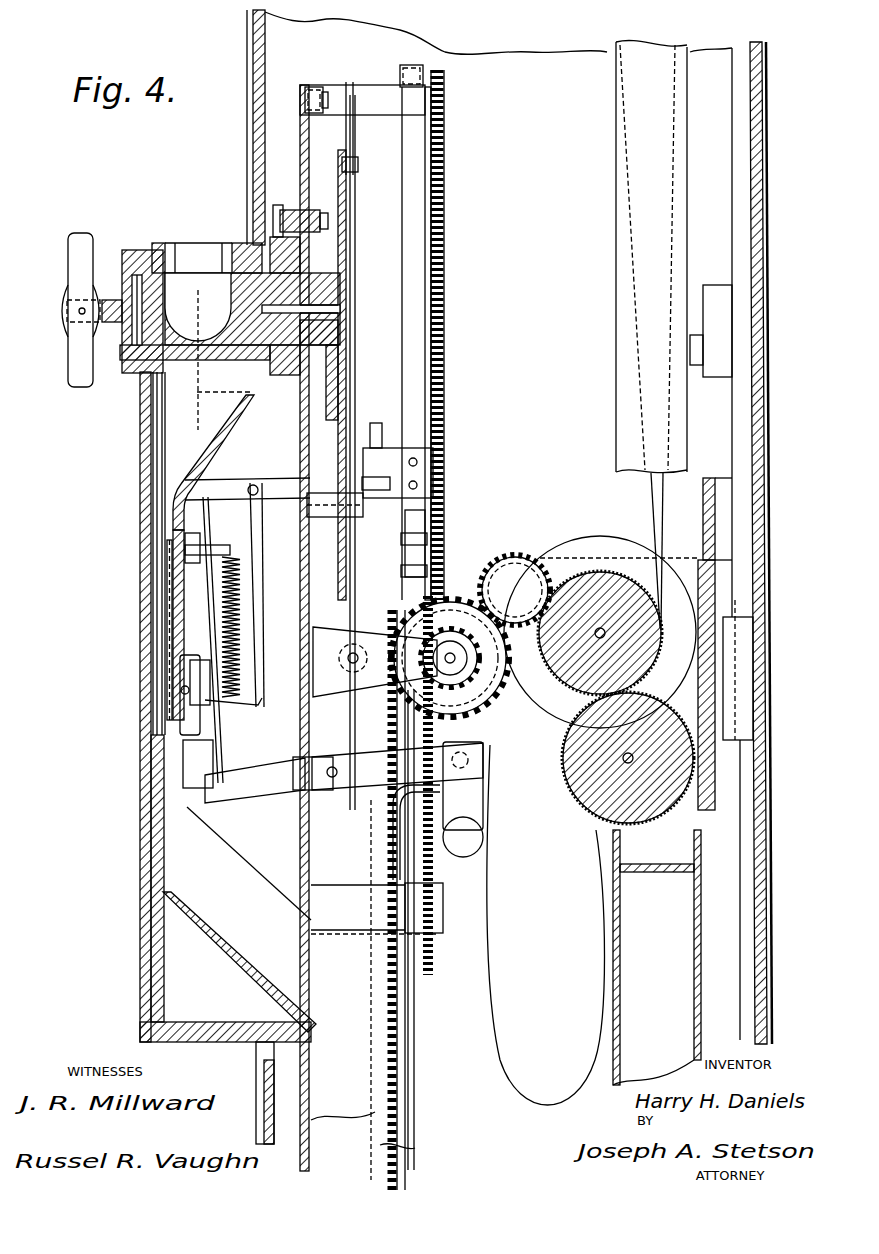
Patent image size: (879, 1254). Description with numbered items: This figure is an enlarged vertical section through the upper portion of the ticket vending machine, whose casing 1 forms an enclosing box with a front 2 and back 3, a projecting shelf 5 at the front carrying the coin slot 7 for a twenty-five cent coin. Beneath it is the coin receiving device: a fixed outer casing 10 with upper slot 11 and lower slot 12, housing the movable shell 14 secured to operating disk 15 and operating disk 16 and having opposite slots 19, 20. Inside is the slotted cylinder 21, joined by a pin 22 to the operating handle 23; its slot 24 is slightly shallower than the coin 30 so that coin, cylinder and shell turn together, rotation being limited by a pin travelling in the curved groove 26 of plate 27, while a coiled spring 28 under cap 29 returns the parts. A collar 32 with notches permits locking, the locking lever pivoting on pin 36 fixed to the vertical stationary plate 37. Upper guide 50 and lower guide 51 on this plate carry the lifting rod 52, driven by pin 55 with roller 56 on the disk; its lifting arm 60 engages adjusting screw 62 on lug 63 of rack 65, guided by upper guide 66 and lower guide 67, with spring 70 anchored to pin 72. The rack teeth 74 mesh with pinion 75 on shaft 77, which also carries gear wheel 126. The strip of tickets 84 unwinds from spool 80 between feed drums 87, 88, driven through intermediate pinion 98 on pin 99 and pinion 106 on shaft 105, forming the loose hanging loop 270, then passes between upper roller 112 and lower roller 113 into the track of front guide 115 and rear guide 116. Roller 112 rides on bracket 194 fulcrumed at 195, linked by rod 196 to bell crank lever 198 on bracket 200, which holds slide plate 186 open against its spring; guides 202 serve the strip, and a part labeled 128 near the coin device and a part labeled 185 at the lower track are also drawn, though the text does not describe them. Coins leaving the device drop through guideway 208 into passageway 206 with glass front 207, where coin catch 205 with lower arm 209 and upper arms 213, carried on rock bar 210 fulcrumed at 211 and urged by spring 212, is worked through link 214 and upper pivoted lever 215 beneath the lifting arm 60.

The casing 1 is at (540, 93).
The front 2 is at (145, 792).
The back 3 is at (764, 220).
The projecting shelf 5 is at (768, 910).
The coin slot 7 is at (206, 250).
The outer casing 10 is at (180, 420).
The upper slot 11 is at (222, 262).
The lower slot 12 is at (226, 356).
The movable shell 14 is at (125, 352).
The operating disk 15 is at (150, 268).
The operating disk 16 is at (350, 360).
The slot 19 is at (176, 272).
The slot 20 is at (190, 352).
The slotted cylinder 21 is at (120, 338).
The pin 22 is at (125, 302).
The operating handle 23 is at (75, 268).
The slot 24 is at (213, 356).
The curved groove 26 is at (126, 270).
The plate 27 is at (138, 262).
The coiled spring 28 is at (122, 300).
The cap 29 is at (120, 316).
The coin 30 is at (185, 545).
The annular projecting collar 32 is at (287, 243).
The pin 36 is at (292, 220).
The vertical stationary plate 37 is at (300, 138).
The upper guide 50 is at (325, 95).
The lower guide 51 is at (355, 513).
The lifting rod 52 is at (350, 250).
The pin 55 is at (358, 170).
The roller 56 is at (354, 163).
The lifting arm 60 is at (430, 517).
The adjusting screw 62 is at (390, 484).
The lug 63 is at (425, 450).
The rack 65 is at (442, 362).
The upper guide 66 is at (423, 78).
The lower guide 67 is at (443, 897).
The spring 70 is at (445, 166).
The pin 72 is at (432, 60).
The teeth 74 is at (440, 945).
The pinion 75 is at (462, 672).
The shaft 77 is at (482, 668).
The spool 80 is at (657, 957).
The strip of tickets 84 is at (626, 193).
The feed drum 87 is at (593, 588).
The feed drum 88 is at (614, 805).
The intermediate pinion 98 is at (492, 583).
The pin 99 is at (520, 565).
The shaft 105 is at (642, 812).
The pinion 106 is at (578, 815).
The upper roller 112 is at (483, 745).
The lower roller 113 is at (485, 836).
The front guide 115 is at (402, 1150).
The rear guide 116 is at (410, 1097).
The gear wheel 126 is at (445, 600).
The liner 128 is at (172, 242).
The bar 185 is at (378, 1142).
The slide plate 186 is at (156, 250).
The bracket 194 is at (272, 800).
The fulcrum 195 is at (312, 785).
The rod 196 is at (208, 590).
The bell crank lever 198 is at (178, 452).
The bracket 200 is at (497, 580).
The guide 202 is at (603, 570).
The coin catch 205 is at (200, 680).
The passageway 206 is at (173, 530).
The glass front 207 is at (167, 578).
The guideway 208 is at (185, 482).
The lower arm 209 is at (183, 745).
The rock bar 210 is at (235, 705).
The fulcrum 211 is at (185, 702).
The spring 212 is at (212, 602).
The upper arm 213 is at (180, 664).
The link 214 is at (250, 608).
The upper pivoted lever 215 is at (173, 515).
The loose hanging loop 270 is at (490, 985).